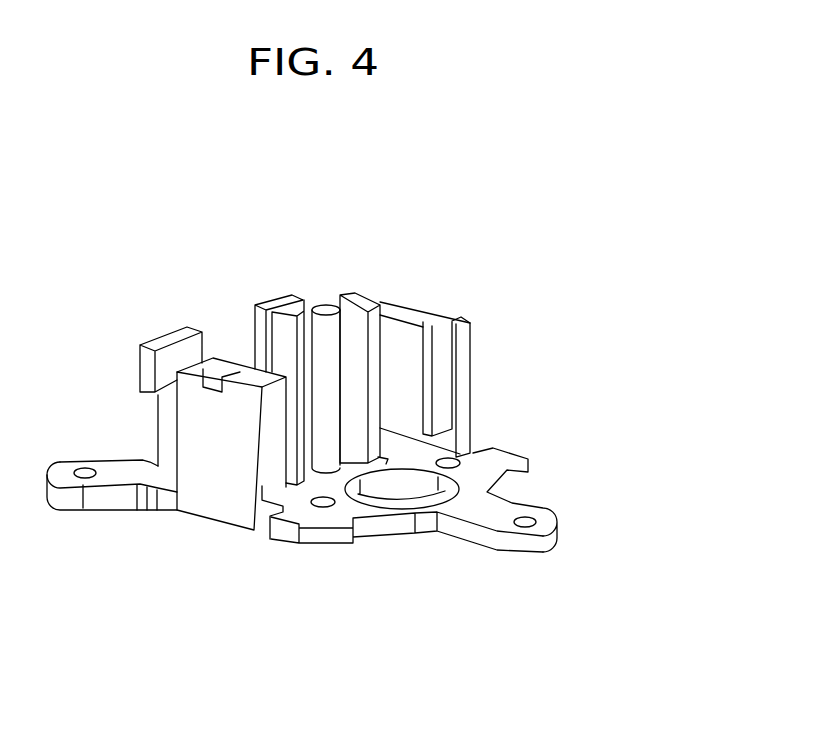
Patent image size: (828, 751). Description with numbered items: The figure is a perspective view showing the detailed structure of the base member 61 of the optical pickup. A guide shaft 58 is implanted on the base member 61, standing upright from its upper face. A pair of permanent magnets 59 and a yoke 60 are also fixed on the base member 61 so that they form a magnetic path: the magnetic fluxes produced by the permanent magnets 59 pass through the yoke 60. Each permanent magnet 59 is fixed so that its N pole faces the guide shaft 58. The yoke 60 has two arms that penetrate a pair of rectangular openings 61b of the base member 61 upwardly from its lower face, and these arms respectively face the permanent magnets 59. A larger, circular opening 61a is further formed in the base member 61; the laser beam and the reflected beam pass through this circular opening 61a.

The guide shaft 58 is at (325, 337).
The permanent magnets 59 is at (235, 362).
The yoke 60 is at (287, 343).
The base member 61 is at (482, 468).
The circular opening 61a is at (405, 497).
The rectangular openings 61b is at (305, 480).